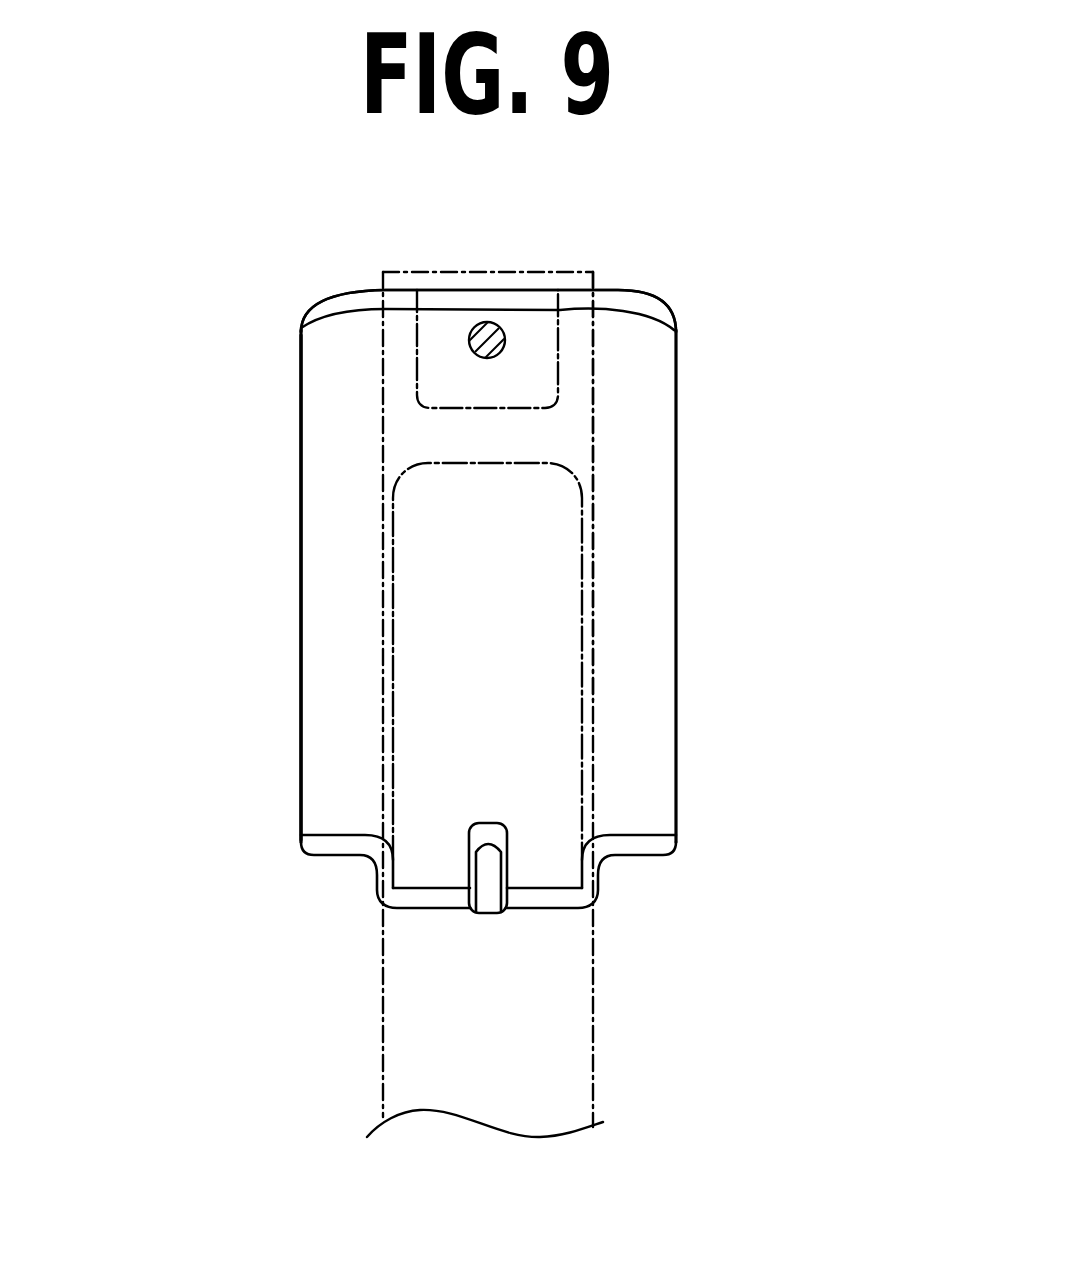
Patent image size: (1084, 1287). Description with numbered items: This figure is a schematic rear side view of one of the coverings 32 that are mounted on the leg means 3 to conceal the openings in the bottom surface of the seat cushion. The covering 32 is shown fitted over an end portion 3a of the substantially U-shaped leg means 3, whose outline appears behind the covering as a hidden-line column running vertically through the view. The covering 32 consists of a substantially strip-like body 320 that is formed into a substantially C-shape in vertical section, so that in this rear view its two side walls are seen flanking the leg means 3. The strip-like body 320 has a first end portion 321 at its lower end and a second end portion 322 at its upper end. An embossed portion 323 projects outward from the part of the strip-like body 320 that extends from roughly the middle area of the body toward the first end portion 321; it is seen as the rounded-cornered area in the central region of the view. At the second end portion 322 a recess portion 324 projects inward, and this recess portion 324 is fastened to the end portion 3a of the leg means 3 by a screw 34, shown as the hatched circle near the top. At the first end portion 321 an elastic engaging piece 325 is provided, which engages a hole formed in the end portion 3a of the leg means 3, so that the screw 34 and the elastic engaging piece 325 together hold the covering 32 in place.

The leg means 3 is at (593, 1045).
The first end portion 3a is at (662, 486).
The covering 32 is at (300, 508).
The screw 34 is at (483, 333).
The strip-like body 320 is at (333, 620).
The first end portion 321 is at (430, 897).
The second end portion 322 is at (578, 300).
The embossed portion 323 is at (612, 661).
The recess portion 324 is at (535, 357).
The elastic engaging piece 325 is at (488, 893).